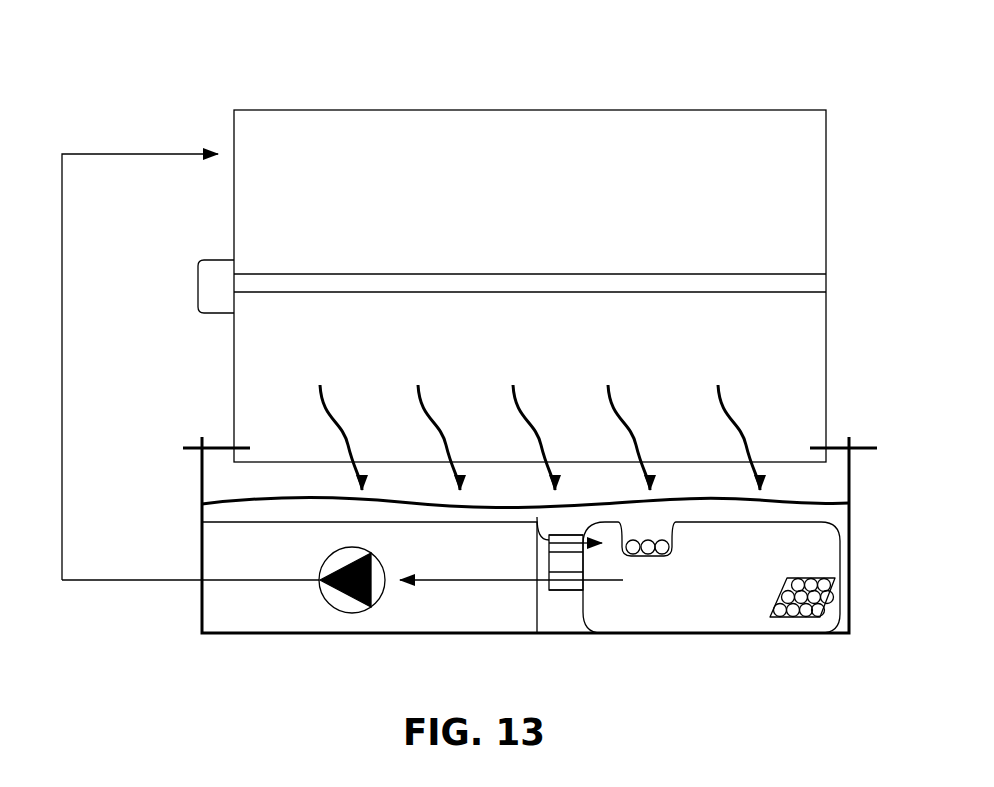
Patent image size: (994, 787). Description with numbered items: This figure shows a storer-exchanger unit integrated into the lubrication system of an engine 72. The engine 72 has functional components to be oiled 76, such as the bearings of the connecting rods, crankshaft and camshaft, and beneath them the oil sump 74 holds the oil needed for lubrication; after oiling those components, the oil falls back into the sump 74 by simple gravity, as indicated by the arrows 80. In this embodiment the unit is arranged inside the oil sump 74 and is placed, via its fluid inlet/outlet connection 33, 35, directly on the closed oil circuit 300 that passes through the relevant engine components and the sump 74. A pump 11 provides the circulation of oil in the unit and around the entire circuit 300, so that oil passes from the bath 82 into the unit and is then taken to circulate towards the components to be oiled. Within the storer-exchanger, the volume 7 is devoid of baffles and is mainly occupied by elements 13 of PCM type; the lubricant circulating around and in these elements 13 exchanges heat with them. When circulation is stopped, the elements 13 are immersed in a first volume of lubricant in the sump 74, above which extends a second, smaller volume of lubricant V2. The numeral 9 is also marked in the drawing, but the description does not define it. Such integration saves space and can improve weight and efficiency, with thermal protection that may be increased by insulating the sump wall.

The engine 72 is at (710, 106).
The functional components of the engine to be oiled 76 is at (327, 269).
The arrows 80 is at (732, 395).
The oil sump 74 is at (855, 524).
The bath 82 is at (241, 603).
The closed oil circuit 300 is at (105, 580).
The pump 11 is at (347, 612).
The fluid inlet/outlet connection 33 is at (553, 570).
The fluid inlet/outlet connection 35 is at (568, 590).
The second volume of lubricant V2 is at (573, 518).
The water 9 is at (656, 530).
The volume 7 is at (819, 559).
The elements of PCM type 13 is at (817, 597).